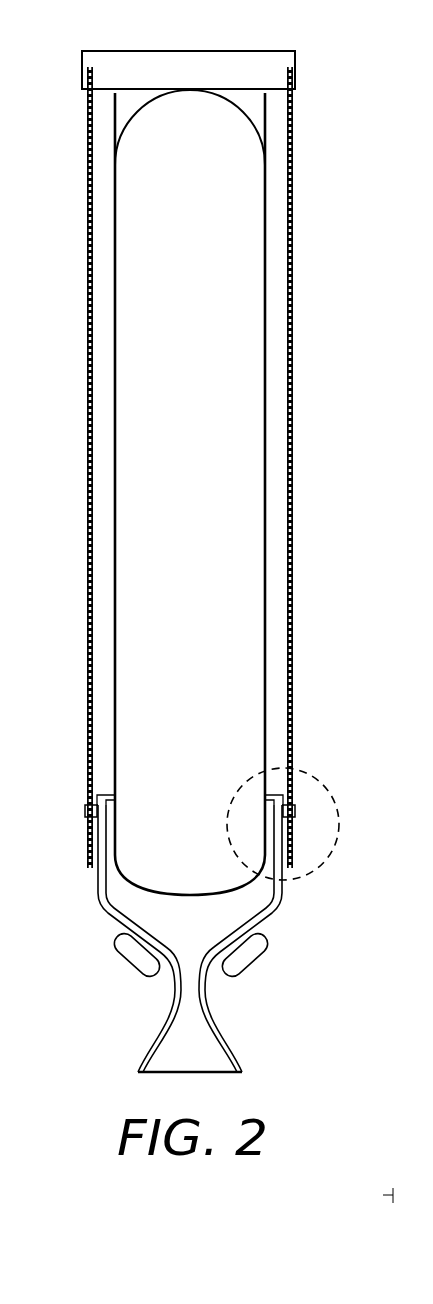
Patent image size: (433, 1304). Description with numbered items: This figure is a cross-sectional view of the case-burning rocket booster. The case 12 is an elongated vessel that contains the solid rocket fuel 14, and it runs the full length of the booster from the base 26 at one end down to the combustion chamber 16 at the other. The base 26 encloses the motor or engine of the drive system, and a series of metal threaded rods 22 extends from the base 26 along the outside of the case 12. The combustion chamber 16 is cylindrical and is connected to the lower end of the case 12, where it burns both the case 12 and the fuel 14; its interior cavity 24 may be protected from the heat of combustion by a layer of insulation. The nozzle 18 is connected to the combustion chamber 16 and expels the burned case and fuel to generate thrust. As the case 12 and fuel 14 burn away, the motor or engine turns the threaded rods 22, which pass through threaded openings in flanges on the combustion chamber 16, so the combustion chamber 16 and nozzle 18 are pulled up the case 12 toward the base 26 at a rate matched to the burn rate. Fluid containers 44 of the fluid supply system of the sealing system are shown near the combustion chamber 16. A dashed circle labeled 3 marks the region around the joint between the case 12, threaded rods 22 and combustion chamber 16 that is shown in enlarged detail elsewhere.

The case 12 is at (266, 233).
The solid rocket fuel 14 is at (213, 451).
The combustion chamber 16 is at (112, 918).
The nozzle 18 is at (237, 1028).
The threaded rods 22 is at (87, 435).
The cavity 24 is at (209, 930).
The base 26 is at (272, 51).
The fluid container 44 is at (132, 962).
The detail circle for FIG. 3 is at (303, 880).